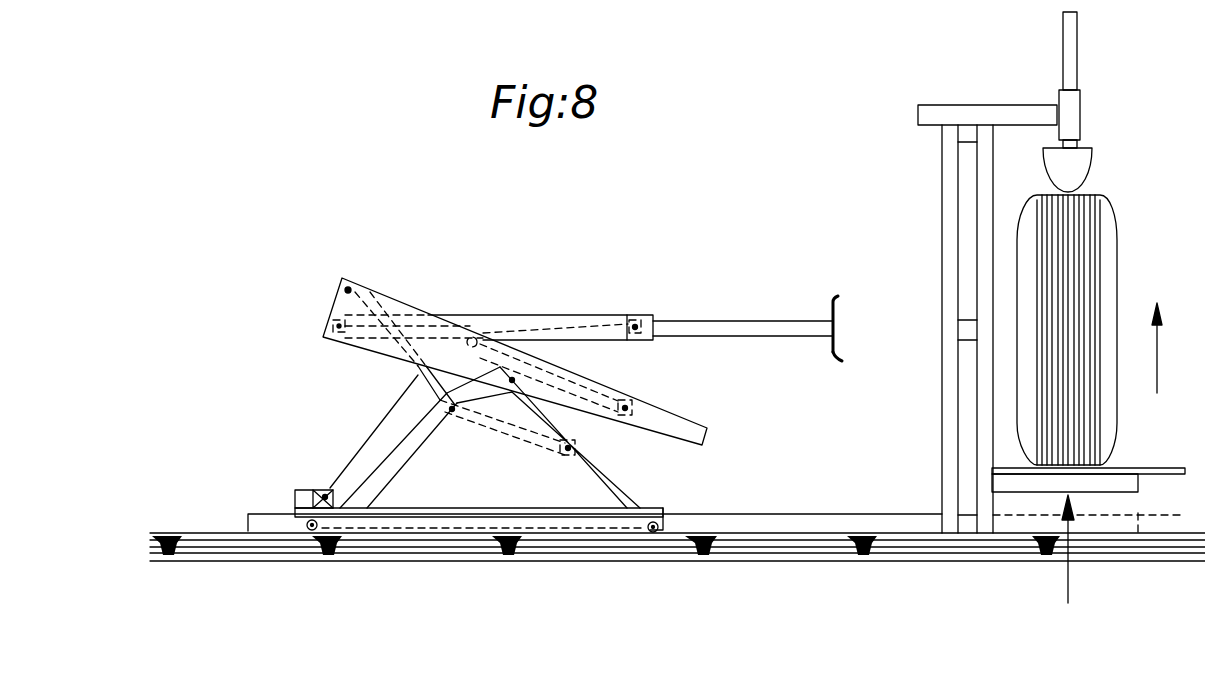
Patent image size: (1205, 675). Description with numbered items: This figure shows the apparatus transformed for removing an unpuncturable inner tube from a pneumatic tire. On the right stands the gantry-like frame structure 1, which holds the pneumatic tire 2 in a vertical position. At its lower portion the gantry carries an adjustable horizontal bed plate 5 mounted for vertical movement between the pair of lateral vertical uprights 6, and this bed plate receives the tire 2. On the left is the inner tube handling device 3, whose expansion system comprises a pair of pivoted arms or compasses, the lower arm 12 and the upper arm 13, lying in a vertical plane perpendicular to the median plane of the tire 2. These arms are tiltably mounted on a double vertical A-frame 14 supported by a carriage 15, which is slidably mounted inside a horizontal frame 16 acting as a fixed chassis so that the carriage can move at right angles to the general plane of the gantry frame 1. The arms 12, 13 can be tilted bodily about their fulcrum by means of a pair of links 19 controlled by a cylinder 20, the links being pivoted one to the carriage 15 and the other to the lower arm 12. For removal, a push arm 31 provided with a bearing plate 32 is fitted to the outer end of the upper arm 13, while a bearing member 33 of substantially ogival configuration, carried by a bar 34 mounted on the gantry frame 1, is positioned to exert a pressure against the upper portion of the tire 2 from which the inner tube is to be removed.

The gantry-like frame structure 1 is at (965, 103).
The pneumatic tire 2 is at (1117, 245).
The inner tube handling device 3 is at (412, 302).
The adjustable horizontal bed plate 5 is at (1126, 462).
The lateral vertical uprights 6 is at (942, 238).
The lower arm 12 is at (663, 420).
The upper arm 13 is at (545, 322).
The double vertical A-frame 14 is at (600, 482).
The carriage 15 is at (433, 508).
The horizontal frame 16 is at (770, 518).
The pair of links 19 is at (422, 377).
The cylinder 20 is at (518, 433).
The push arm 31 is at (688, 325).
The bearing plate 32 is at (840, 312).
The bearing member 33 is at (1081, 162).
The bar 34 is at (1073, 47).